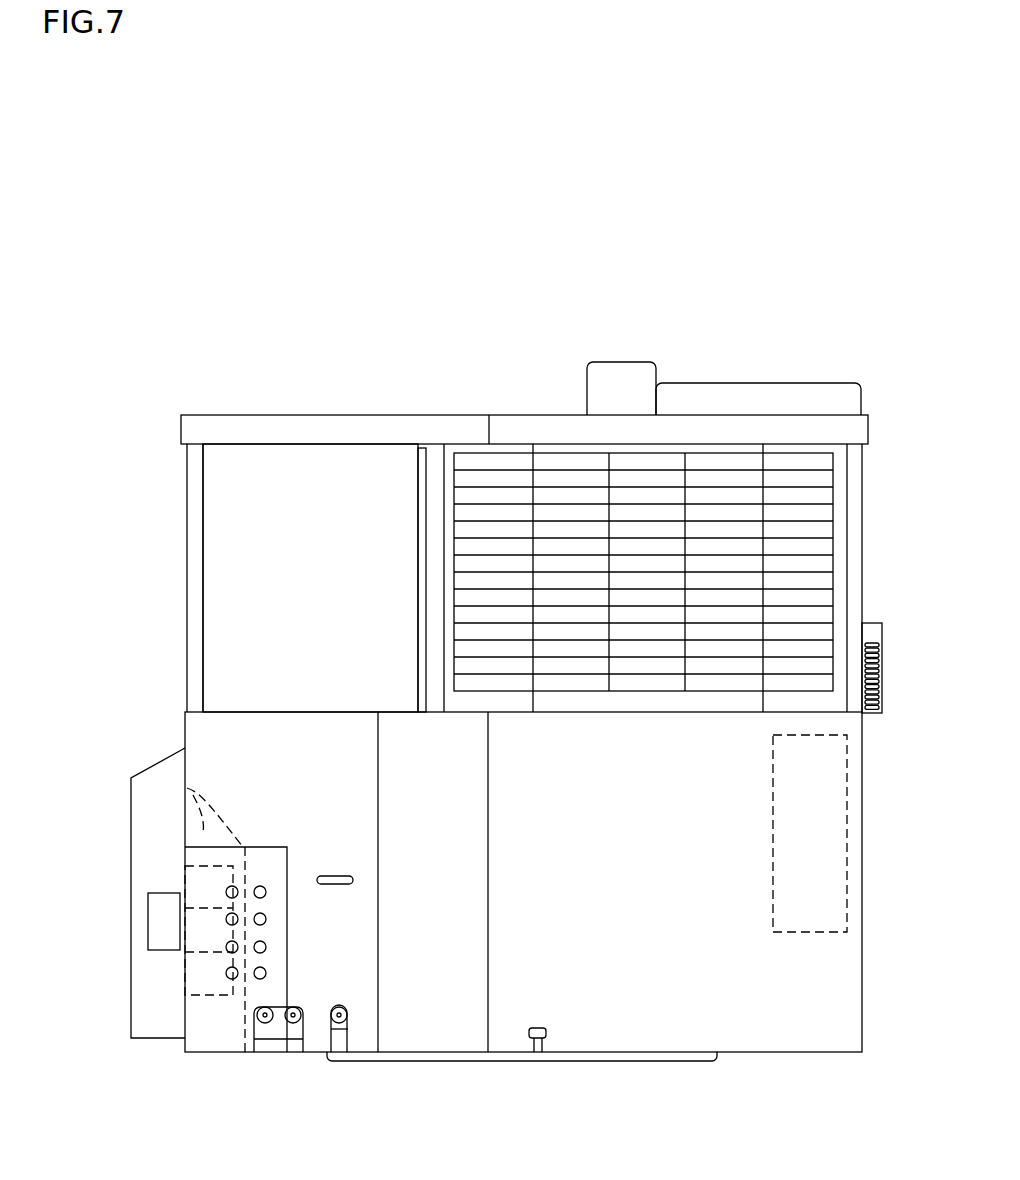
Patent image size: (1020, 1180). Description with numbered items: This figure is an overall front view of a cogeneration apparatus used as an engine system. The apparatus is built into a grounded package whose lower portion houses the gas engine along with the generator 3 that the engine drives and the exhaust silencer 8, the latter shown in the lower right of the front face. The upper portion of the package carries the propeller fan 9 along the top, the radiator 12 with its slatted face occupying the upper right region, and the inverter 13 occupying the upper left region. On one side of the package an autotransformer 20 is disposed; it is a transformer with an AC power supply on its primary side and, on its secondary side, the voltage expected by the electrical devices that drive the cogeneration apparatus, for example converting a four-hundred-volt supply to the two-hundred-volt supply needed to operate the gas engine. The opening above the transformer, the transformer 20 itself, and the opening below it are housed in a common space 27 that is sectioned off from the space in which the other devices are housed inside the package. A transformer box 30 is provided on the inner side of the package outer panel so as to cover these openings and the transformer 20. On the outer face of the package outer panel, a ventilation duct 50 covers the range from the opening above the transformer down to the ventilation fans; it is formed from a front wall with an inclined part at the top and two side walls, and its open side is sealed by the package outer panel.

The generator 3 is at (223, 740).
The exhaust silencer 8 is at (828, 800).
The propeller fan 9 is at (708, 395).
The radiator 12 is at (515, 495).
The inverter 13 is at (300, 470).
The autotransformer 20 is at (200, 878).
The common space 27 is at (187, 788).
The transformer box 30 is at (245, 962).
The ventilation duct 50 is at (130, 835).